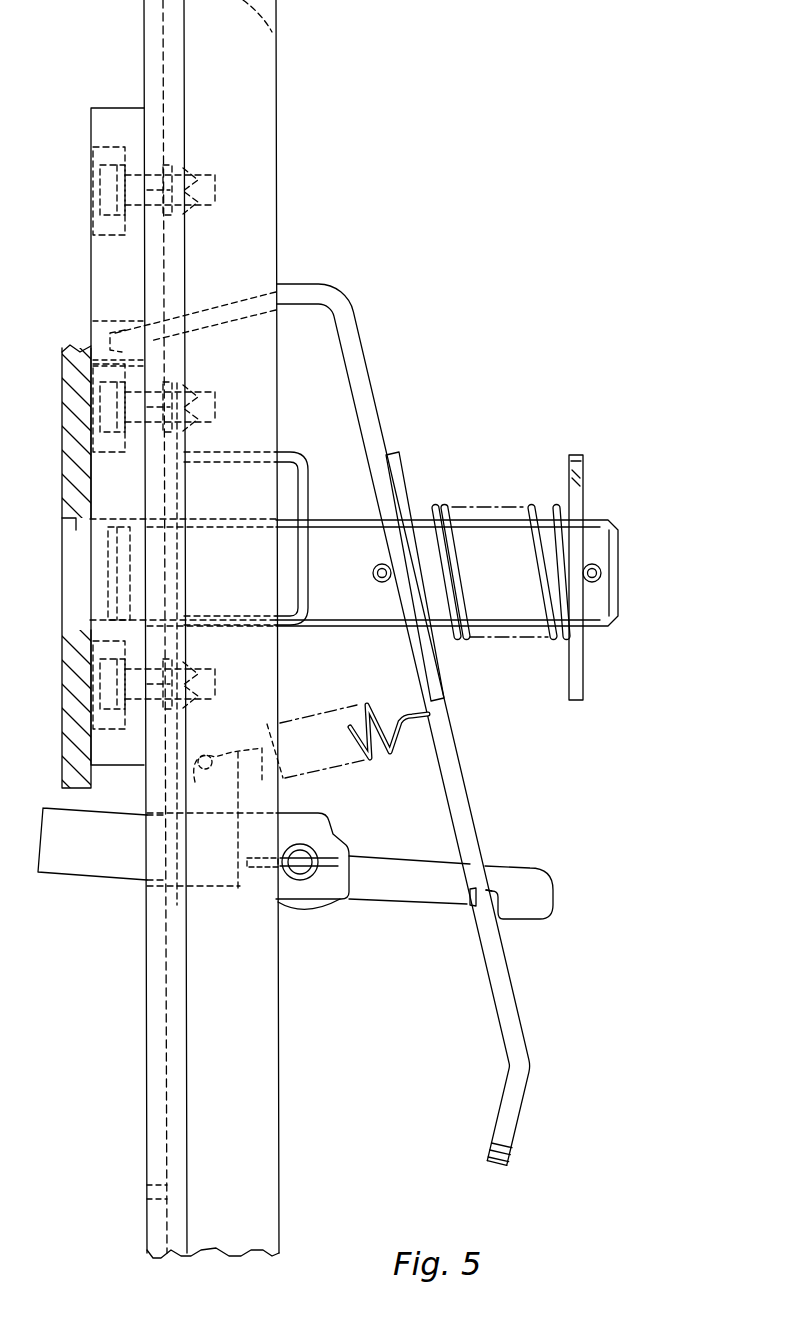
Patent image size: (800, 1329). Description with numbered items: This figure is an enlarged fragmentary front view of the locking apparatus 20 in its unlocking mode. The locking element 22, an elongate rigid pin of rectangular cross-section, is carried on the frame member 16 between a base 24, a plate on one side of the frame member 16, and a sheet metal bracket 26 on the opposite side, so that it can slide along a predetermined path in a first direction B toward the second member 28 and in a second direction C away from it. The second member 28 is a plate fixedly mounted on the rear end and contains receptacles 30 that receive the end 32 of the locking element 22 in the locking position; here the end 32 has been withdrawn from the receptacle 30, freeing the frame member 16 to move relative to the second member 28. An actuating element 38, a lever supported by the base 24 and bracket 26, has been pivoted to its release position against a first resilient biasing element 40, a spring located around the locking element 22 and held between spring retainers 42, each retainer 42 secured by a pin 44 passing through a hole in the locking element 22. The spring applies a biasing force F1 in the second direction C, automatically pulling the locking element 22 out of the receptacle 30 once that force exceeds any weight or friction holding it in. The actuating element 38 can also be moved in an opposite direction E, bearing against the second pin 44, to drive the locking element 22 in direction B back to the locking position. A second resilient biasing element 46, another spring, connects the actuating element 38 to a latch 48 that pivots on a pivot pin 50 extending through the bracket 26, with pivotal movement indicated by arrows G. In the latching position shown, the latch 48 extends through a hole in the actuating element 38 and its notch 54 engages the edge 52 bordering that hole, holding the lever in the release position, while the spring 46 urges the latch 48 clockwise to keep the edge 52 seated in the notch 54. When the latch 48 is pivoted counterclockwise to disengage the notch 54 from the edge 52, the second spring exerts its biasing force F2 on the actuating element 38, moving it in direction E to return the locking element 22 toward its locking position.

The frame member 16 is at (279, 1200).
The locking apparatus 20 is at (625, 1052).
The locking element 22 is at (620, 588).
The base 24 is at (91, 108).
The bracket 26 is at (300, 452).
The second member 28 is at (67, 348).
The receptacle 30 is at (73, 530).
The end 32 is at (108, 612).
The actuating element 38 is at (518, 1003).
The first resilient biasing element 40 is at (532, 508).
The spring retainer 42 is at (585, 686).
The pin 44 is at (381, 583).
The second resilient biasing element 46 is at (393, 753).
The latch 48 is at (556, 900).
The pivot pin 50 is at (315, 880).
The edge 52 is at (487, 888).
The notch 54 is at (475, 910).
The first direction B is at (243, 555).
The second direction C is at (208, 590).
The opposite direction E is at (495, 1040).
The pivotal movement of latch G is at (437, 838).
The resilient biasing force F1 is at (527, 685).
The biasing force F2 is at (328, 797).